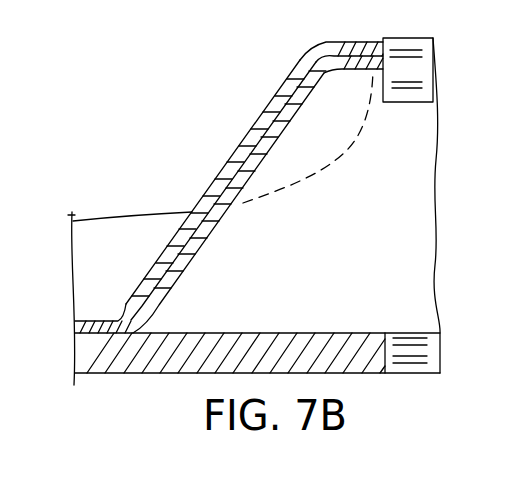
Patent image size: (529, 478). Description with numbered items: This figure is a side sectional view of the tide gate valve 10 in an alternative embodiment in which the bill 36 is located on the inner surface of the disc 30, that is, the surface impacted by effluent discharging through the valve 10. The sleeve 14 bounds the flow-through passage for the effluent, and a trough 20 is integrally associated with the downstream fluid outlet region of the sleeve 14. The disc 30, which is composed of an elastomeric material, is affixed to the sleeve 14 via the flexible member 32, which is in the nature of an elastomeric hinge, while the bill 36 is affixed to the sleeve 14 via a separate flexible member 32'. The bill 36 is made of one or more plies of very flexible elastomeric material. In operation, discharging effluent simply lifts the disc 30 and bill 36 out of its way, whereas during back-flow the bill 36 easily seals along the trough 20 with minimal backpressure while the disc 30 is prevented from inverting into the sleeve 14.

The valve 10 is at (180, 166).
The sleeve 14 is at (409, 102).
The trough 20 is at (141, 376).
The disc 30 is at (241, 146).
The flexible member 32 is at (310, 54).
The flexible member 32' is at (353, 93).
The bill 36 is at (268, 152).